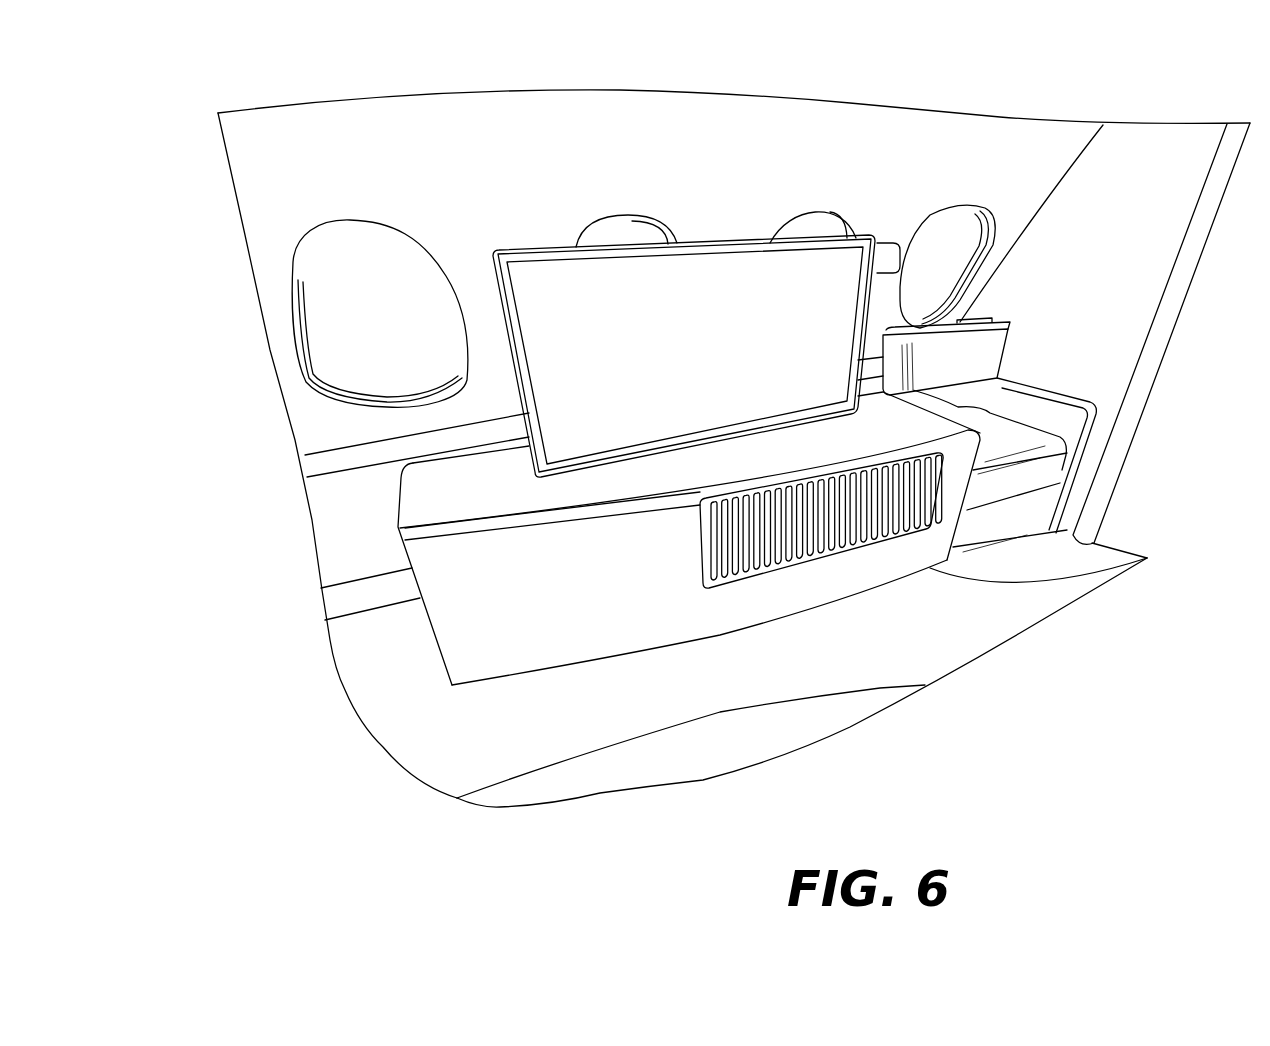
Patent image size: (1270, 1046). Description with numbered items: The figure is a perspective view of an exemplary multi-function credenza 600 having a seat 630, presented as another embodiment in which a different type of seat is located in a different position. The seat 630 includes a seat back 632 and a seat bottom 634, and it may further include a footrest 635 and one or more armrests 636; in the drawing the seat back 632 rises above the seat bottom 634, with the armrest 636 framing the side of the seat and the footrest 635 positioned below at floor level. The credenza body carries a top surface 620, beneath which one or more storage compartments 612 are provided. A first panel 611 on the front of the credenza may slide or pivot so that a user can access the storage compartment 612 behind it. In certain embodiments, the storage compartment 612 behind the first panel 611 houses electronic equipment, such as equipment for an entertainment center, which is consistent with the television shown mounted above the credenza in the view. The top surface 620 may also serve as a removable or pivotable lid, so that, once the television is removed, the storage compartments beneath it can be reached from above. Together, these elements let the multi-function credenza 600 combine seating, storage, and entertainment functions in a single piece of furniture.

The multi-function credenza 600 is at (337, 72).
The first panel 611 is at (808, 530).
The storage compartment 612 is at (607, 580).
The top surface 620 is at (433, 510).
The seat 630 is at (933, 293).
The seat back 632 is at (960, 353).
The seat bottom 634 is at (1018, 467).
The footrest 635 is at (1003, 527).
The armrest 636 is at (1093, 407).